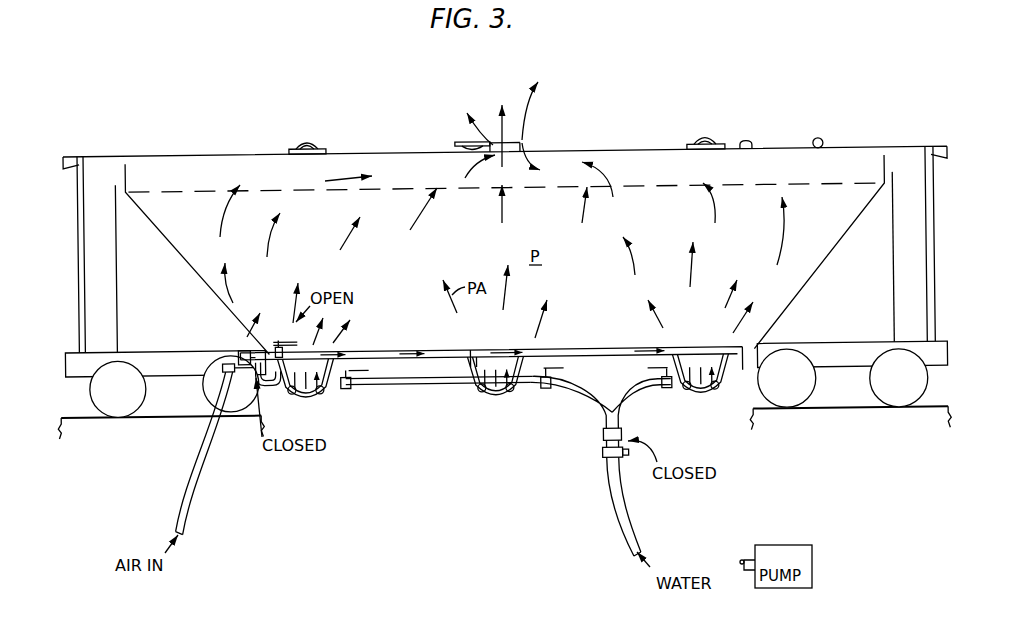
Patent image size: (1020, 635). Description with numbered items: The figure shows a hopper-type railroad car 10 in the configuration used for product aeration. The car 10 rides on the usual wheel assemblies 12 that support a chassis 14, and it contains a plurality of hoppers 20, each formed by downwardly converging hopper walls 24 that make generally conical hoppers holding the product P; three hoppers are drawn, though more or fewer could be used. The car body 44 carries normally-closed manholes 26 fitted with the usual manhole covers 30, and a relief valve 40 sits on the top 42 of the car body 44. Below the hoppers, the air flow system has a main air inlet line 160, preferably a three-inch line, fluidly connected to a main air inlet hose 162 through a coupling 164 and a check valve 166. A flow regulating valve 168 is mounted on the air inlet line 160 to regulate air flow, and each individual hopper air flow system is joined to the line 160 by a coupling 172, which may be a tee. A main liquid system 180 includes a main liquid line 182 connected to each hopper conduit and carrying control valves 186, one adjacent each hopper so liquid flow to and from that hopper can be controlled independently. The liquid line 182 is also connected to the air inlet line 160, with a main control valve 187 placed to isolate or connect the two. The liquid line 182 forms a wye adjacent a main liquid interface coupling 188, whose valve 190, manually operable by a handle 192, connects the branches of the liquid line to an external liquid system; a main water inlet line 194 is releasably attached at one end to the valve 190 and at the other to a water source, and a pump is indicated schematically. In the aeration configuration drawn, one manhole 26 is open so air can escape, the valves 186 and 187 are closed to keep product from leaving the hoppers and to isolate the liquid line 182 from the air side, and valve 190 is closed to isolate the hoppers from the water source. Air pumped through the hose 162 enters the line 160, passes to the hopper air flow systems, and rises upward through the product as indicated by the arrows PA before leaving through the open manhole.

The hopper-type railroad car 10 is at (170, 118).
The wheel assemblies 12 is at (108, 425).
The chassis 14 is at (73, 350).
The hoppers 20 is at (298, 250).
The hopper walls 24 is at (153, 227).
The manholes 26 is at (713, 133).
The manhole covers 30 is at (460, 143).
The relief valve 40 is at (812, 140).
The top 42 is at (742, 144).
The car body 44 is at (848, 158).
The main air inlet line 160 is at (432, 355).
The main air inlet hose 162 is at (200, 502).
The coupling 164 is at (233, 375).
The check valve 166 is at (245, 352).
The flow regulating valve 168 is at (277, 341).
The coupling 172 is at (474, 365).
The main liquid system 180 is at (568, 410).
The main liquid line 182 is at (375, 390).
The control valves 186 is at (343, 395).
The main control valve 187 is at (232, 405).
The main liquid interface coupling 188 is at (625, 432).
The valve 190 is at (610, 457).
The handle 192 is at (623, 456).
The main water inlet line 194 is at (618, 530).